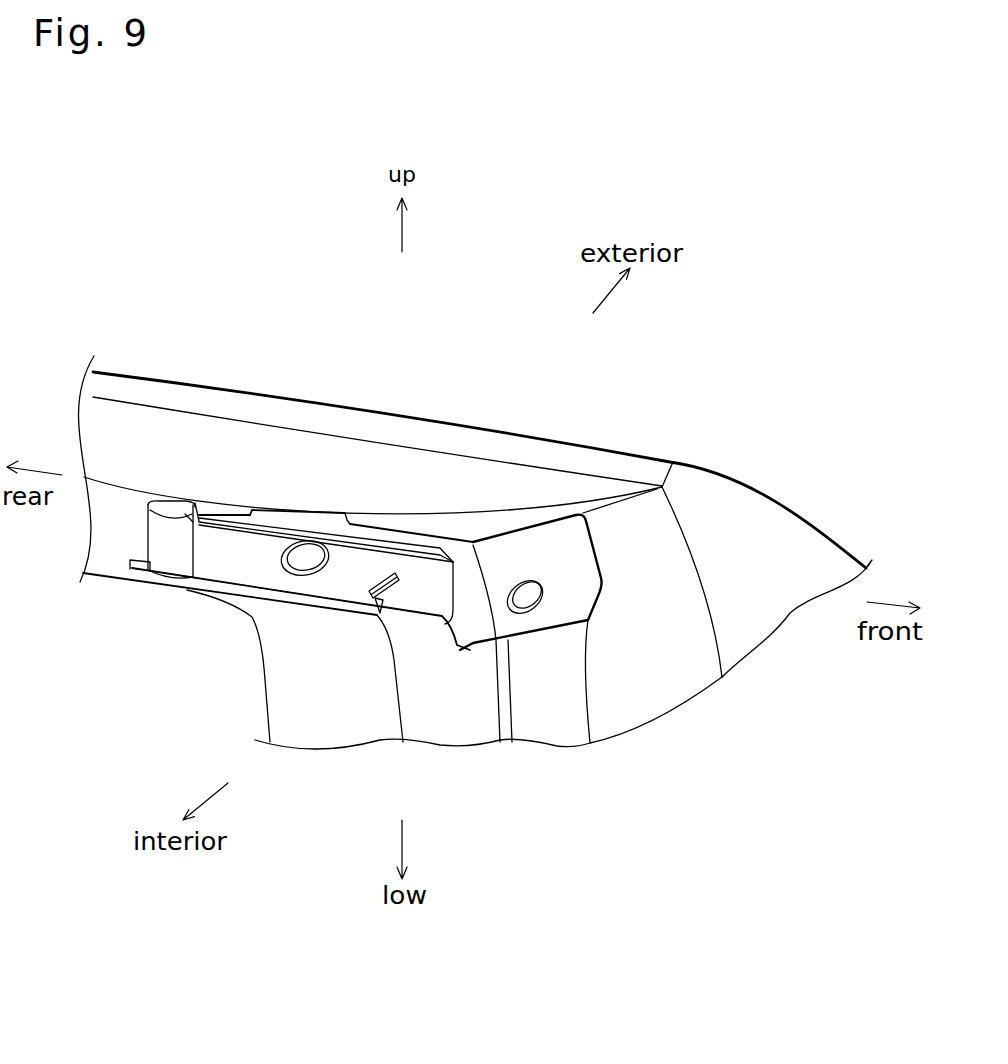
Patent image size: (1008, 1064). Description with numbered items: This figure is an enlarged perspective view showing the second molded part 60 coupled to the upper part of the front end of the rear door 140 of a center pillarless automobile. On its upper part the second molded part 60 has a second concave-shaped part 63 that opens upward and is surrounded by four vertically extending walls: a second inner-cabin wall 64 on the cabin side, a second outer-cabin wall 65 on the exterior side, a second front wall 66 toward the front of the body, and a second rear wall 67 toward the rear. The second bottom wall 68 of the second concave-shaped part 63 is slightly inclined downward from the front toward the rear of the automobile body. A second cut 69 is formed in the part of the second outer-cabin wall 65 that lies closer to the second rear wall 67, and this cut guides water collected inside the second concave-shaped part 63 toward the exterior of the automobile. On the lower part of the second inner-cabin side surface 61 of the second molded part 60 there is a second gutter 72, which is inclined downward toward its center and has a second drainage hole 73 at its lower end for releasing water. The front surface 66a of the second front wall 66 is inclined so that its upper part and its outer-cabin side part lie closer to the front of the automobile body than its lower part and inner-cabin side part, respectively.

The rear door 140 is at (485, 428).
The second concave-shaped part 63 is at (387, 440).
The second rear wall 67 is at (197, 503).
The second cut 69 is at (218, 513).
The second bottom wall 68 is at (263, 516).
The second outer-cabin wall 65 is at (347, 510).
The second inner-cabin wall 64 is at (352, 543).
The second inner-cabin side surface 61 is at (197, 553).
The second gutter 72 is at (135, 570).
The second front wall 66 is at (473, 545).
The front surface 66a is at (505, 643).
The second drainage hole 73 is at (253, 623).
The second molded part 60 is at (198, 622).